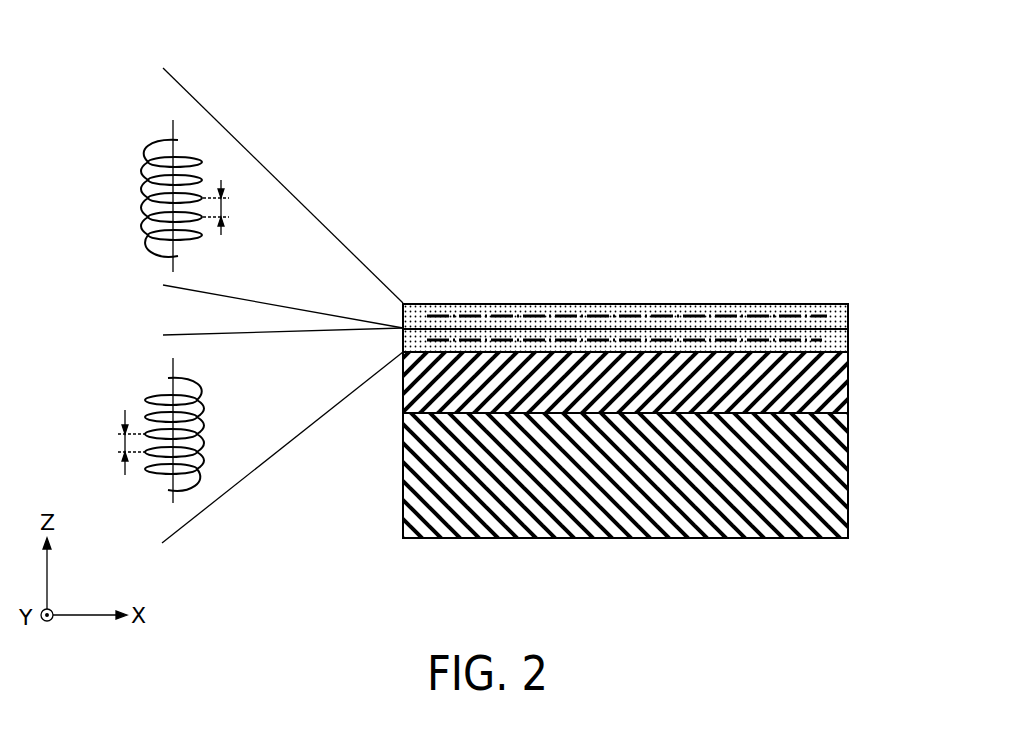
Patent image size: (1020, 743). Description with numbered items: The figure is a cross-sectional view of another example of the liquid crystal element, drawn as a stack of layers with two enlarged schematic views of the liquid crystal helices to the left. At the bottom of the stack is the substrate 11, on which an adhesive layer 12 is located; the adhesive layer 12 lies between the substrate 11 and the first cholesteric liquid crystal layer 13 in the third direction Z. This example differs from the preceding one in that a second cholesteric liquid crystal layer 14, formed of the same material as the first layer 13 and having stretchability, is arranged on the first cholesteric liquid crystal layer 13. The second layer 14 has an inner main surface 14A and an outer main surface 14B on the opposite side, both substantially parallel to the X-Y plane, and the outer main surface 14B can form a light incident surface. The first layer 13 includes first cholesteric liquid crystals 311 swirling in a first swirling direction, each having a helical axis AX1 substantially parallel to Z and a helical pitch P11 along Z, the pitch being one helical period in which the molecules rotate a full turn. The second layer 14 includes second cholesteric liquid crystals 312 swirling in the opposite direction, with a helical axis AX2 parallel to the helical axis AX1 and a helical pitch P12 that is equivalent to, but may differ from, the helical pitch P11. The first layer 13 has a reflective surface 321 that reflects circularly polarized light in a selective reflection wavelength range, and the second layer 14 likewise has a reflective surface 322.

The substrate 11 is at (449, 525).
The adhesive layer 12 is at (508, 413).
The first cholesteric liquid crystal layer 13 is at (416, 328).
The second cholesteric liquid crystal layer 14 is at (421, 313).
The main surface (inner surface) 14A is at (809, 335).
The main surface (outer surface) 14B is at (769, 292).
The first cholesteric liquid crystal 311 is at (207, 389).
The second cholesteric liquid crystal 312 is at (141, 155).
The reflective surface 321 is at (641, 340).
The reflective surface 322 is at (692, 316).
The helical axis AX1 is at (170, 368).
The helical axis AX2 is at (170, 125).
The helical pitch P11 is at (118, 443).
The helical pitch P12 is at (228, 212).